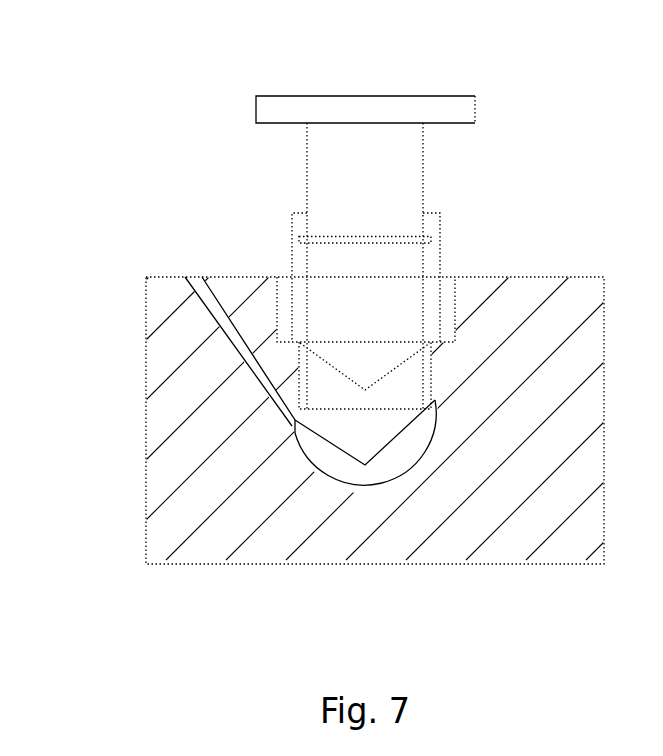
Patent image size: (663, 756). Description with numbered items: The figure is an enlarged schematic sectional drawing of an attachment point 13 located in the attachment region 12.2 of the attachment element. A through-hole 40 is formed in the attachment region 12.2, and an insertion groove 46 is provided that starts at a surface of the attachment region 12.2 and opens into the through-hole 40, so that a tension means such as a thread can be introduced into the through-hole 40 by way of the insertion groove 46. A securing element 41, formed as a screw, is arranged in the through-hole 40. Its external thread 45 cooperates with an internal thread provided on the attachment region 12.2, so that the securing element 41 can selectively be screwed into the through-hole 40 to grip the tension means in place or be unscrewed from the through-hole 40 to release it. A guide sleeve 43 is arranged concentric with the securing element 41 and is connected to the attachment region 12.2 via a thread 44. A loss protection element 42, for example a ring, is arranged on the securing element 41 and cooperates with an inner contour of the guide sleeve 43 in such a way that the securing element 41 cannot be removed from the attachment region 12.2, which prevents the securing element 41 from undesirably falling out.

The attachment point 13 is at (198, 75).
The securing element 41 is at (400, 147).
The loss protection element 42 is at (402, 241).
The guide sleeve 43 is at (300, 225).
The thread 44 is at (282, 285).
The external thread 45 is at (427, 380).
The insertion groove 46 is at (200, 285).
The attachment region 12.2 is at (163, 368).
The through-hole 40 is at (313, 455).